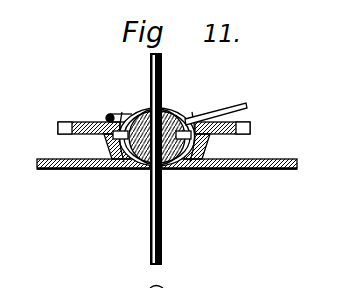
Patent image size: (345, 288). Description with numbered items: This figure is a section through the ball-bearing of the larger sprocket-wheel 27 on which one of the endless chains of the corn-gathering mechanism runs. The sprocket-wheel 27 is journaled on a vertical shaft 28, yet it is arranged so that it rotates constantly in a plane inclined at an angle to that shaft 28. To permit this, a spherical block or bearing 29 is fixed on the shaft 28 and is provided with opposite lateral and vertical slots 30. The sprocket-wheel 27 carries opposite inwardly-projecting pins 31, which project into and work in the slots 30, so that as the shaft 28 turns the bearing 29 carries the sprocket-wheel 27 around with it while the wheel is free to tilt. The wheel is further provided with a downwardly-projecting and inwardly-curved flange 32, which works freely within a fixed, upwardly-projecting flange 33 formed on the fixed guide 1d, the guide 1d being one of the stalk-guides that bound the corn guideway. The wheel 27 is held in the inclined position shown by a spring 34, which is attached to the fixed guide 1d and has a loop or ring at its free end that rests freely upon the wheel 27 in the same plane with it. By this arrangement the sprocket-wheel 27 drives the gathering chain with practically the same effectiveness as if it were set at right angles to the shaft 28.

The fixed guide 1d is at (294, 150).
The sprocket-wheel 27 is at (96, 122).
The shaft 28 is at (149, 65).
The spherical block or bearing 29 is at (170, 115).
The slots 30 is at (132, 167).
The pins 31 is at (121, 167).
The flange 32 is at (112, 139).
The flange 33 is at (200, 146).
The spring 34 is at (221, 106).